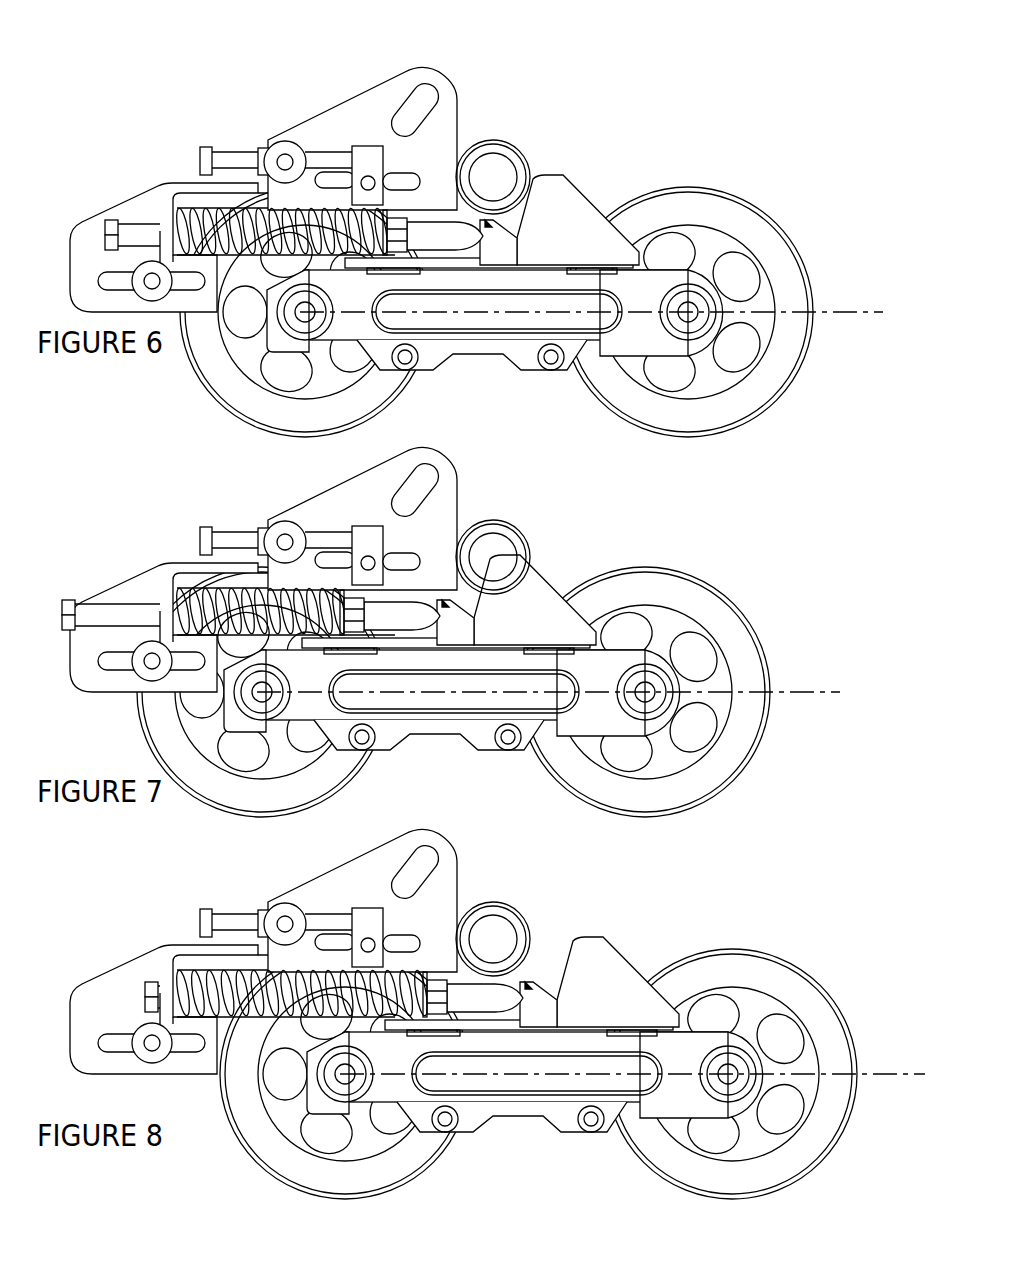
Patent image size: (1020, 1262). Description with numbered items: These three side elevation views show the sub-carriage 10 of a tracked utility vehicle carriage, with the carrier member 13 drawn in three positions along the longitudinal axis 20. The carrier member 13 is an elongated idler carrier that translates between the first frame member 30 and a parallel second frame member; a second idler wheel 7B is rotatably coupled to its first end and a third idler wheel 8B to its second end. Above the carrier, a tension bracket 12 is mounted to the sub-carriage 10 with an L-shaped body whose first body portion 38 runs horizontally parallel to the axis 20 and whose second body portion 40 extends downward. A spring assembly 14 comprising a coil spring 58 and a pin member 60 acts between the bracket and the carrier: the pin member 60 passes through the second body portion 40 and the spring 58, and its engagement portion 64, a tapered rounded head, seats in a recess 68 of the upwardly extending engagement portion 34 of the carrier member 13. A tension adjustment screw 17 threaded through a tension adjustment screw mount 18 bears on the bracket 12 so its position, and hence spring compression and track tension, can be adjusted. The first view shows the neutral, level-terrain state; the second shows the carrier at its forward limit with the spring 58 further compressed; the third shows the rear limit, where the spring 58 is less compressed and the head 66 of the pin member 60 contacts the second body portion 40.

In FIG. 6, the sub-carriage 10 is at (338, 97).
In FIG. 7, the sub-carriage 10 is at (557, 573).
In FIG. 8, the sub-carriage 10 is at (577, 977).
In FIG. 6, the tension bracket 12 is at (185, 195).
In FIG. 7, the tension bracket 12 is at (185, 575).
In FIG. 8, the tension bracket 12 is at (173, 957).
In FIG. 6, the carrier member 13 is at (488, 343).
In FIG. 7, the carrier member 13 is at (477, 727).
In FIG. 8, the carrier member 13 is at (528, 1108).
In FIG. 6, the spring assembly 14 is at (104, 219).
In FIG. 7, the spring assembly 14 is at (60, 597).
In FIG. 8, the spring assembly 14 is at (145, 975).
In FIG. 6, the tension adjustment screw 17 is at (230, 157).
In FIG. 6, the tension adjustment screw mount 18 is at (283, 142).
In FIG. 6, the longitudinal axis 20 is at (830, 312).
In FIG. 7, the longitudinal axis 20 is at (793, 692).
In FIG. 8, the longitudinal axis 20 is at (880, 1073).
In FIG. 6, the first frame member 30 is at (446, 86).
In FIG. 7, the first frame member 30 is at (338, 492).
In FIG. 8, the first frame member 30 is at (338, 874).
In FIG. 6, the engagement portion 34 is at (505, 235).
In FIG. 7, the engagement portion 34 is at (458, 622).
In FIG. 8, the engagement portion 34 is at (538, 992).
In FIG. 6, the first body portion 38 is at (327, 195).
In FIG. 7, the first body portion 38 is at (326, 572).
In FIG. 8, the first body portion 38 is at (230, 957).
In FIG. 6, the second body portion 40 is at (163, 231).
In FIG. 7, the second body portion 40 is at (163, 612).
In FIG. 8, the second body portion 40 is at (167, 1000).
In FIG. 6, the coil spring 58 is at (233, 243).
In FIG. 7, the coil spring 58 is at (192, 612).
In FIG. 8, the coil spring 58 is at (233, 1010).
In FIG. 6, the pin member 60 is at (138, 224).
In FIG. 6, the engagement portion 64 is at (458, 243).
In FIG. 7, the engagement portion 64 is at (412, 607).
In FIG. 8, the engagement portion 64 is at (500, 1000).
In FIG. 6, the head 66 is at (105, 240).
In FIG. 7, the head 66 is at (62, 618).
In FIG. 8, the head 66 is at (147, 990).
In FIG. 6, the recess 68 is at (489, 229).
In FIG. 6, the second idler wheel 7B is at (258, 434).
In FIG. 7, the second idler wheel 7B is at (213, 813).
In FIG. 8, the second idler wheel 7B is at (310, 1190).
In FIG. 6, the third idler wheel 8B is at (689, 437).
In FIG. 7, the third idler wheel 8B is at (655, 815).
In FIG. 8, the third idler wheel 8B is at (753, 1197).